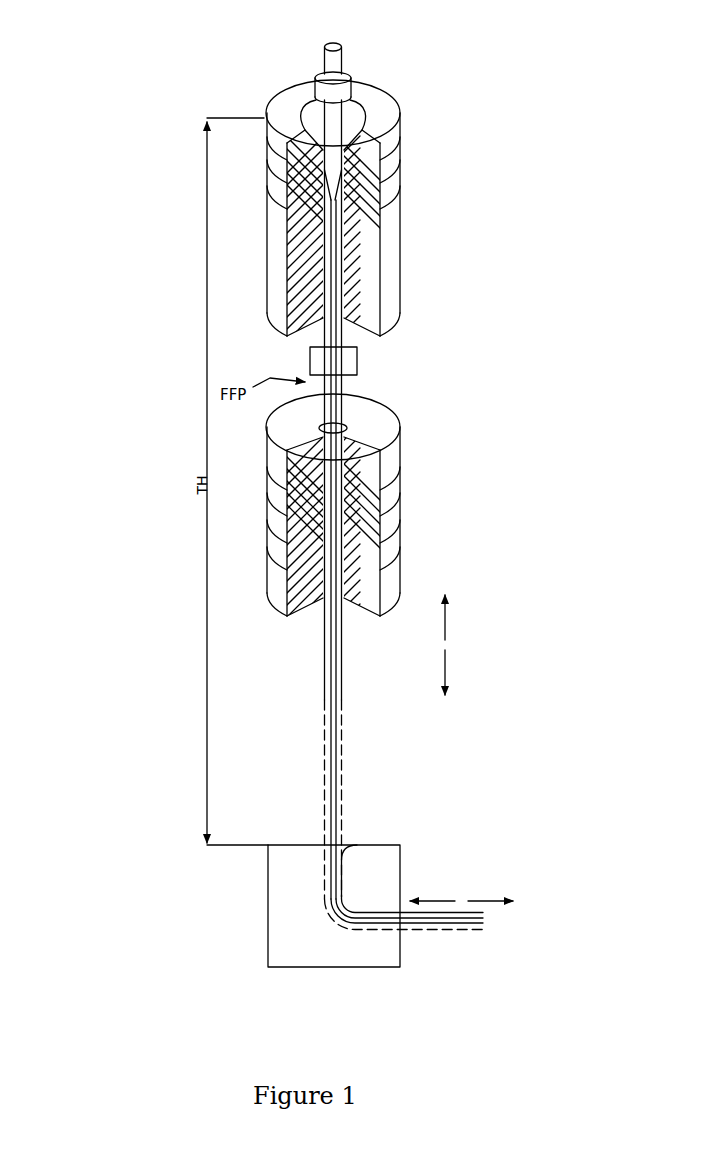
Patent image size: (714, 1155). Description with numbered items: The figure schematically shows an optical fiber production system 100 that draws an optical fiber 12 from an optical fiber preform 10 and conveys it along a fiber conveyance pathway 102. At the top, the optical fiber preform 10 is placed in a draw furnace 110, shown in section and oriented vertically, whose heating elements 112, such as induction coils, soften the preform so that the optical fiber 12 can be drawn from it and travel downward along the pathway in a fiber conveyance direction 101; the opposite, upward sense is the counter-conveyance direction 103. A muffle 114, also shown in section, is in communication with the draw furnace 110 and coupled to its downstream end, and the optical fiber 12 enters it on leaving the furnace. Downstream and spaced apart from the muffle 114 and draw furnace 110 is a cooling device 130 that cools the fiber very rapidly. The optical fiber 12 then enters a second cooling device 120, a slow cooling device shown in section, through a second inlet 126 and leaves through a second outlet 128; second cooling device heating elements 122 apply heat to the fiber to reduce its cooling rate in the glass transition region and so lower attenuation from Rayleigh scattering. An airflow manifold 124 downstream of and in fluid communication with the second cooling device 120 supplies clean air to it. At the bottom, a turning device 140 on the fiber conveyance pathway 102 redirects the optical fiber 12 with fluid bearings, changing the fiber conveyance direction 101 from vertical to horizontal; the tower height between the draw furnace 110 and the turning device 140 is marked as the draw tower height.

The optical fiber preform 10 is at (316, 68).
The optical fiber production system 100 is at (100, 135).
The draw furnace 110 is at (256, 118).
The heating elements 112 is at (400, 152).
The muffle 114 is at (416, 258).
The optical fiber 12 is at (276, 346).
The fiber conveyance pathway 102 is at (345, 338).
The cooling device 130 is at (357, 362).
The second inlet 126 is at (352, 428).
The second cooling device heating elements 122 is at (398, 482).
The second cooling device 120 is at (446, 493).
The airflow manifold 124 is at (420, 571).
The counter-conveyance direction 103 is at (448, 616).
The fiber conveyance direction 101 is at (448, 672).
The second outlet 128 is at (300, 642).
The turning device 140 is at (284, 977).